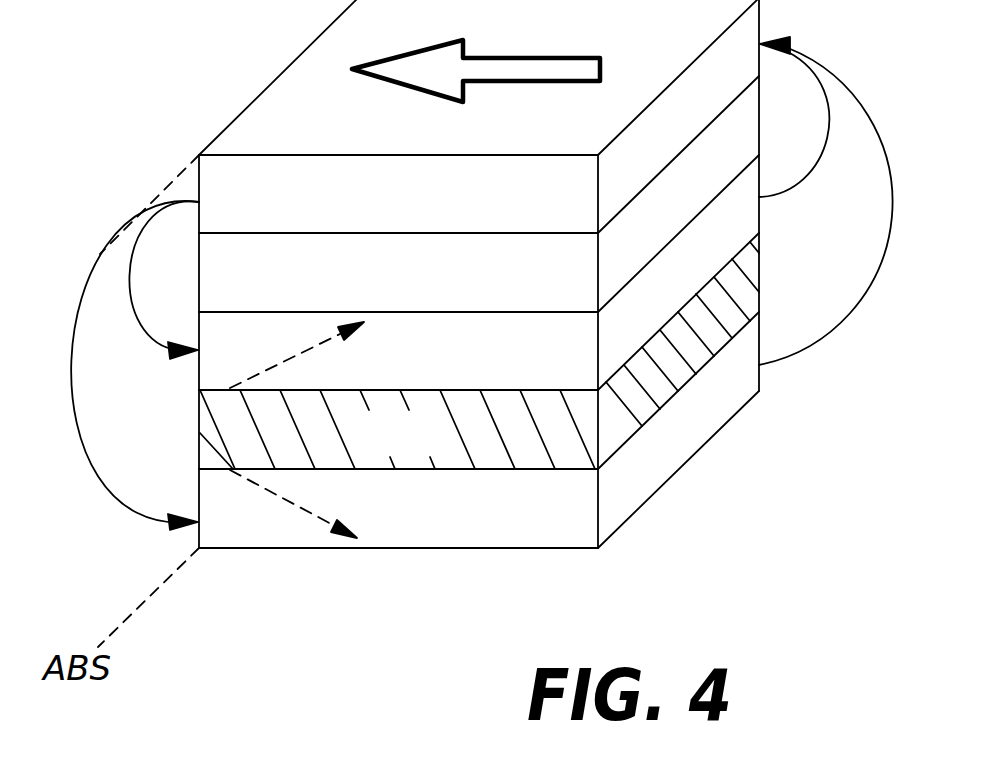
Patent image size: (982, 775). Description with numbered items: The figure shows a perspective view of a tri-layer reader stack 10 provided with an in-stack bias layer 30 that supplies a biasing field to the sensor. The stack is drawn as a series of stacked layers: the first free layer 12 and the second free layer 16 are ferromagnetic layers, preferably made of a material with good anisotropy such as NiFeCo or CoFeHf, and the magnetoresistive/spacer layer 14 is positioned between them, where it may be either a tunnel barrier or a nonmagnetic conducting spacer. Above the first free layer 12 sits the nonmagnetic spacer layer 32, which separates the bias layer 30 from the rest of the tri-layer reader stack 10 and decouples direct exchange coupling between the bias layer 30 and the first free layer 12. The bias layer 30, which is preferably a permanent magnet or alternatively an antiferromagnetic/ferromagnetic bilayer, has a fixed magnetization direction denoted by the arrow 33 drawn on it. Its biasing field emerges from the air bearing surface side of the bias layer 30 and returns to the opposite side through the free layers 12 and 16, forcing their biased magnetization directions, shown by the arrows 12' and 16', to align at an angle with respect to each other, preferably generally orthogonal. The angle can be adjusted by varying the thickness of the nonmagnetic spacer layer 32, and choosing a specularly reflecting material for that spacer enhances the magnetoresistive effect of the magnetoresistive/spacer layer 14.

The tri-layer reader stack 10 is at (797, 247).
The first free layer 12 is at (479, 311).
The magnetization direction of first free layer 12' is at (337, 353).
The magnetoresistive/spacer layer 14 is at (413, 452).
The second free layer 16 is at (398, 508).
The magnetization direction of second free layer 16' is at (333, 507).
The in-stack bias layer 30 is at (428, 207).
The nonmagnetic spacer layer 32 is at (423, 283).
The magnetization direction of bias layer 33 is at (535, 55).